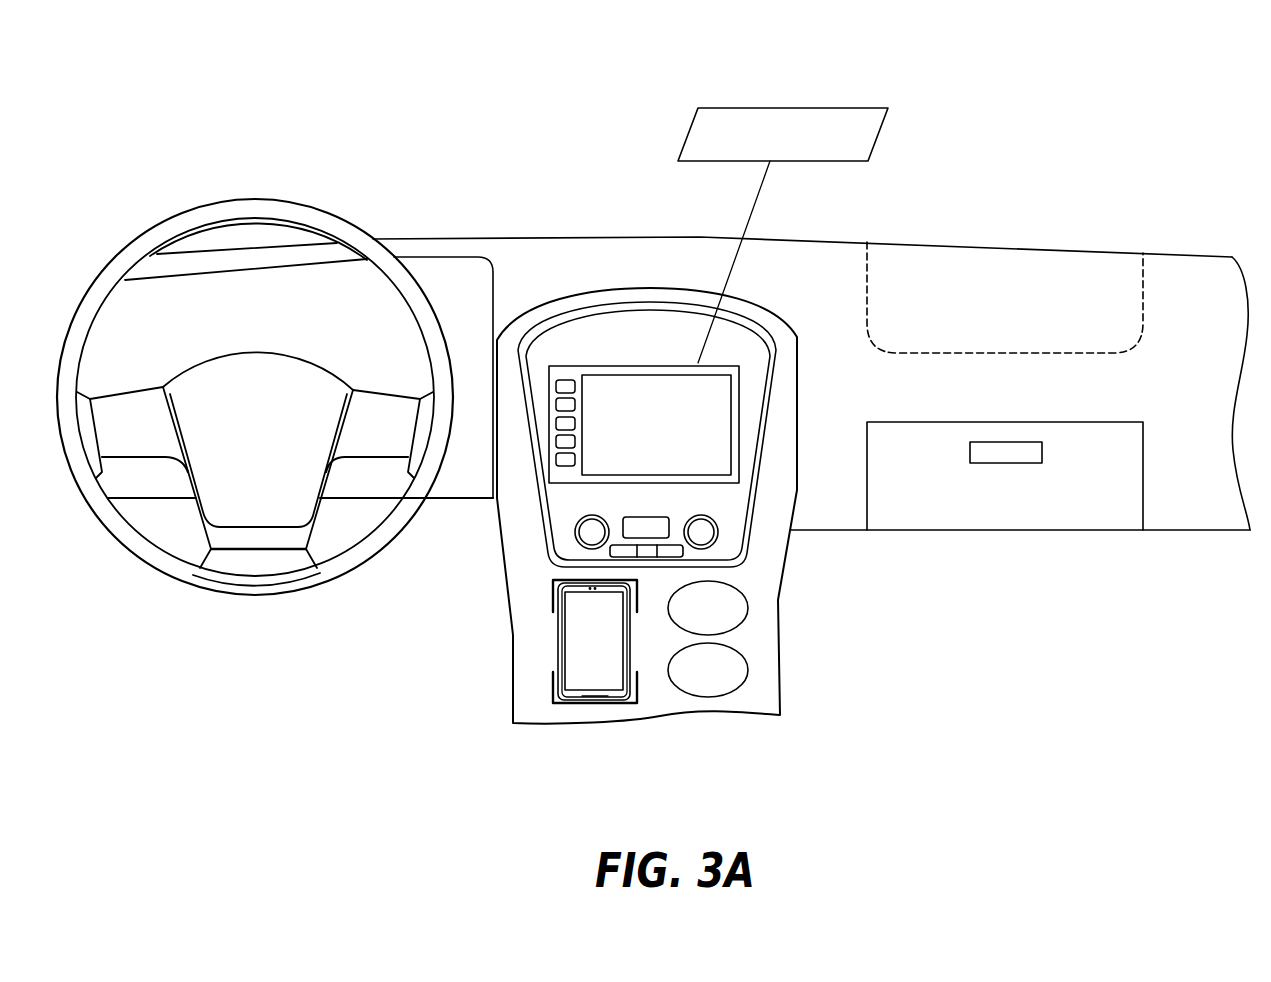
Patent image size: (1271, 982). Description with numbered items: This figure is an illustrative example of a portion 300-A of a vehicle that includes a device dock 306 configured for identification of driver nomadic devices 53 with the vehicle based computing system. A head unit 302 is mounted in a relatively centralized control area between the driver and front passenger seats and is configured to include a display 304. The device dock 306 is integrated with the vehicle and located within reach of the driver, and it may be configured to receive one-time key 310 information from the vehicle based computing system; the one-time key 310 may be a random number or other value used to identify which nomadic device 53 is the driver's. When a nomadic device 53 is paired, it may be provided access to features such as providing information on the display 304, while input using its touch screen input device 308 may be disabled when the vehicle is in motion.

The portion of a vehicle 300-A is at (163, 72).
The head unit 302 is at (590, 363).
The display 304 is at (660, 402).
The device dock 306 is at (556, 688).
The touch screen input device 308 is at (583, 632).
The nomadic device 53 is at (560, 612).
The one-time key 310 is at (815, 103).